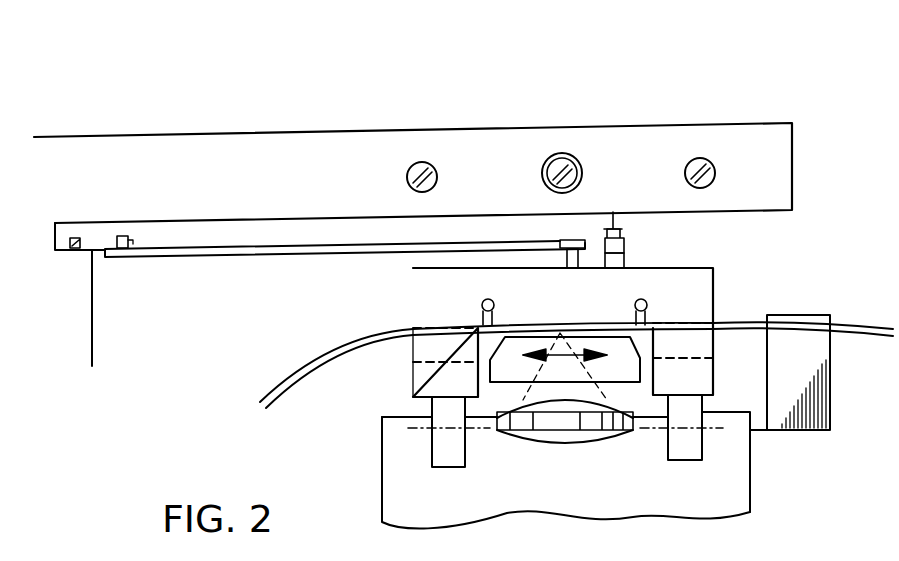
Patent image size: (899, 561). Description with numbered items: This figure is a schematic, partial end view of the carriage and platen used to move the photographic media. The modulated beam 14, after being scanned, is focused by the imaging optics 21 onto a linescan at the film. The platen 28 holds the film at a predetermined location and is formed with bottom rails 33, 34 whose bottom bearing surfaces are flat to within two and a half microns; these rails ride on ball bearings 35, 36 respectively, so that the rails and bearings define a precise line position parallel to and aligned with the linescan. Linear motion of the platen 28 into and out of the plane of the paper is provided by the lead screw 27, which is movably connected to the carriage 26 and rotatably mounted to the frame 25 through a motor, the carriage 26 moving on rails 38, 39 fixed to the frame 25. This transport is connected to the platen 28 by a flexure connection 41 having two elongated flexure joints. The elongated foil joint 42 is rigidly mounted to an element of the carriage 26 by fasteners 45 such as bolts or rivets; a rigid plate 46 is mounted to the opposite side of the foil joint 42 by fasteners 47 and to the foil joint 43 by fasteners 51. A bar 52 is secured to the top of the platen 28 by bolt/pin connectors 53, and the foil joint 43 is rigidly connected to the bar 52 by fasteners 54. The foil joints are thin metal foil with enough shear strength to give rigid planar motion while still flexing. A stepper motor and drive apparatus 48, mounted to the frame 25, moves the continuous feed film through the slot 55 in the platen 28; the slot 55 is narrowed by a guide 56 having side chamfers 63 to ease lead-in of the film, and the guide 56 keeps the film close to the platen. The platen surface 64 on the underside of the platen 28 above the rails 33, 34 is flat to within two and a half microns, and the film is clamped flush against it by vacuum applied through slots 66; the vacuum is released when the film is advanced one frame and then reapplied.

The modulated beam 14 is at (97, 311).
The imaging optics 21 is at (605, 432).
The frame 25 is at (751, 492).
The carriage 26 is at (636, 106).
The lead screw 27 is at (562, 153).
The platen 28 is at (715, 301).
The bottom rail 33 is at (704, 380).
The bottom rail 34 is at (426, 382).
The ball bearing 35 is at (690, 443).
The ball bearing 36 is at (440, 445).
The rail 38 is at (707, 158).
The rail 39 is at (430, 162).
The flexure connection 41 is at (192, 296).
The elongated foil joint 42 is at (107, 248).
The foil joint 43 is at (566, 252).
The fasteners 45 is at (79, 237).
The rigid plate 46 is at (307, 252).
The fasteners 47 is at (130, 243).
The stepper motor and drive apparatus 48 is at (800, 315).
The fasteners 51 is at (558, 240).
The bar 52 is at (624, 245).
The bolt/pin connectors 53 is at (624, 262).
The fasteners 54 is at (613, 226).
The slot 55 is at (433, 347).
The guide 56 is at (653, 370).
The side chamfers 63 is at (564, 310).
The platen surface 64 is at (560, 331).
The slots 66 is at (482, 304).